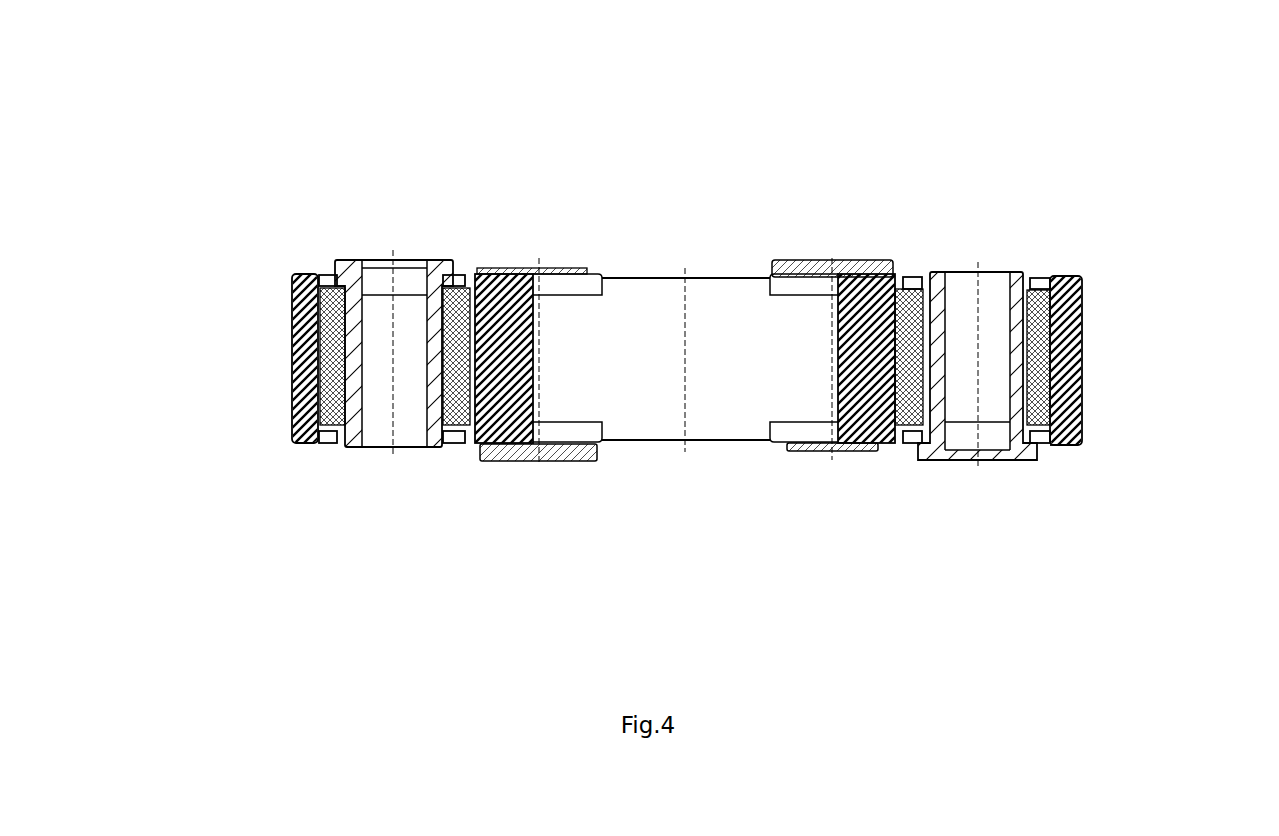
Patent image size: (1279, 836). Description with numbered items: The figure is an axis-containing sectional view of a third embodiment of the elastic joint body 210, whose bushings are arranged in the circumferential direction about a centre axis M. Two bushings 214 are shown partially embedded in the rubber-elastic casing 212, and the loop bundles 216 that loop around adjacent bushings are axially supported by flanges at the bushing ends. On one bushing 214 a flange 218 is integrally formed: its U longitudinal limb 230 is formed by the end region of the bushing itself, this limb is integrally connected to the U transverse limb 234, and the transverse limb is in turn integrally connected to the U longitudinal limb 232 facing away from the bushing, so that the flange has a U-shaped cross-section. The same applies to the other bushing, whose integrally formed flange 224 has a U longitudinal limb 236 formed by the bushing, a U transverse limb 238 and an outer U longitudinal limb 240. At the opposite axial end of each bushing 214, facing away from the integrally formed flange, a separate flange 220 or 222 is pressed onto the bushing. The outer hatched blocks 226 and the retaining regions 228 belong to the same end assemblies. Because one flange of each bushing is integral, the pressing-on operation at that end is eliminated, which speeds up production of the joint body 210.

The elastic joint body 210 is at (1122, 121).
The rubber-elastic casing 212 is at (492, 273).
The bushing 214 is at (452, 268).
The loop bundle 216 is at (292, 310).
The flange 218 is at (280, 203).
The separate flange 220 is at (340, 447).
The separate flange 222 is at (1053, 277).
The flange 224 is at (1033, 487).
The end block 226 is at (1077, 277).
The retainer 228 is at (292, 443).
The U longitudinal limb 230 is at (340, 266).
The U longitudinal limb 232 is at (325, 277).
The U transverse limb 234 is at (292, 275).
The U longitudinal limb 236 is at (1013, 460).
The U transverse limb 238 is at (1047, 450).
The U longitudinal limb 240 is at (1082, 433).
The centre axis M is at (683, 270).